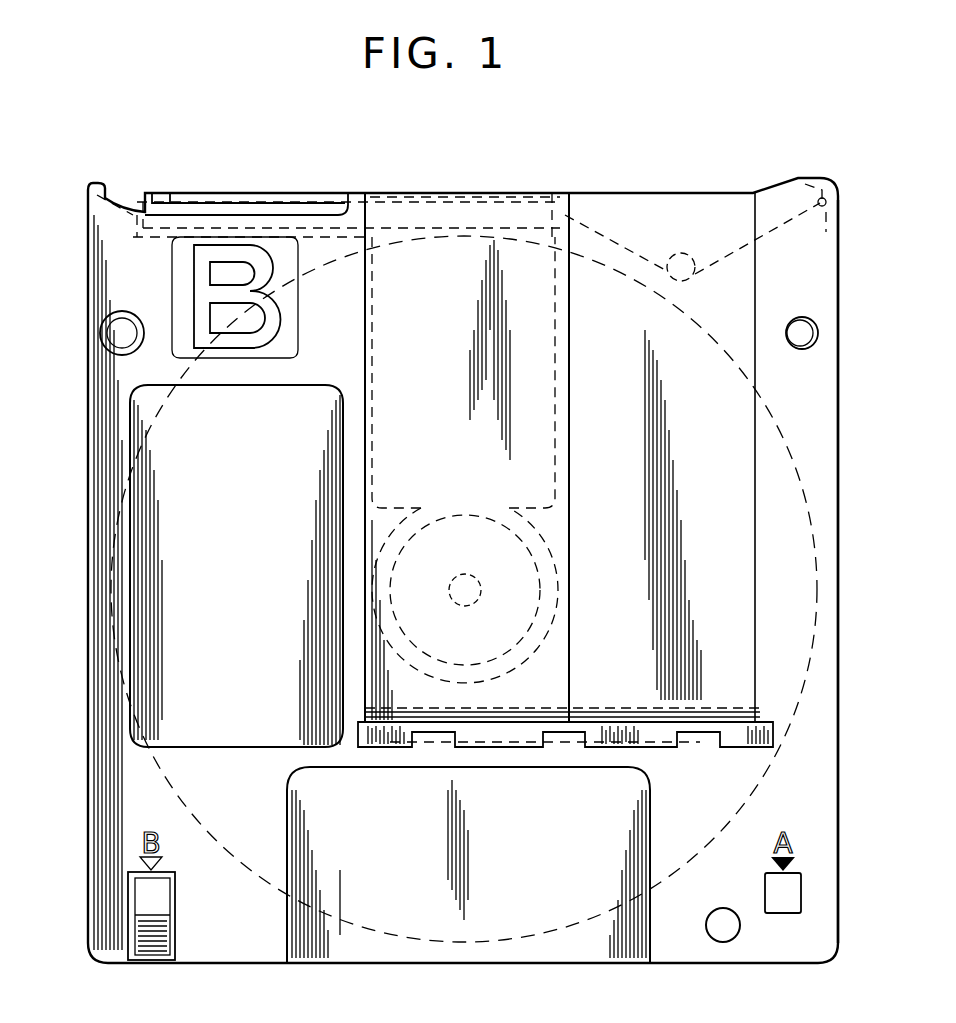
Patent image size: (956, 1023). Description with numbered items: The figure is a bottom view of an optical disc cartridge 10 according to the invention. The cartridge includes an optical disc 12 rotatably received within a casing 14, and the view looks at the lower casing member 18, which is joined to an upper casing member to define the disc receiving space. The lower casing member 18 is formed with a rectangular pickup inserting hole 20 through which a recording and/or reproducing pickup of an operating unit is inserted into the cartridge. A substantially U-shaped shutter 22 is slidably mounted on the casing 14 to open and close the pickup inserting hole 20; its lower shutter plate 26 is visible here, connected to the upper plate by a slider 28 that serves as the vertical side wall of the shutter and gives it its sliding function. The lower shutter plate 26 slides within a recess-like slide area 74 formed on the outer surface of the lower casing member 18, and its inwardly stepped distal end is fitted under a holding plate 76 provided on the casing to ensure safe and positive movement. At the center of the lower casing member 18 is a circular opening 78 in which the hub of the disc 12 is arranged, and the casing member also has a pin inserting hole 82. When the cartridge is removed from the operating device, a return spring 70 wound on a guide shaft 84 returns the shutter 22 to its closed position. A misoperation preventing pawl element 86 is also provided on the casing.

The optical disc cartridge 10 is at (681, 178).
The optical disc 12 is at (818, 614).
The casing 14 is at (100, 398).
The lower casing member 18 is at (838, 411).
The pickup inserting hole 20 is at (556, 396).
The shutter 22 is at (477, 188).
The lower shutter plate 26 is at (556, 525).
The slider 28 is at (250, 192).
The return spring 70 is at (743, 254).
The slide area 74 is at (758, 518).
The holding plate 76 is at (666, 737).
The circular opening 78 is at (547, 635).
The pin inserting hole 82 is at (818, 326).
The guide shaft 84 is at (684, 253).
The misoperation preventing pawl element 86 is at (130, 932).